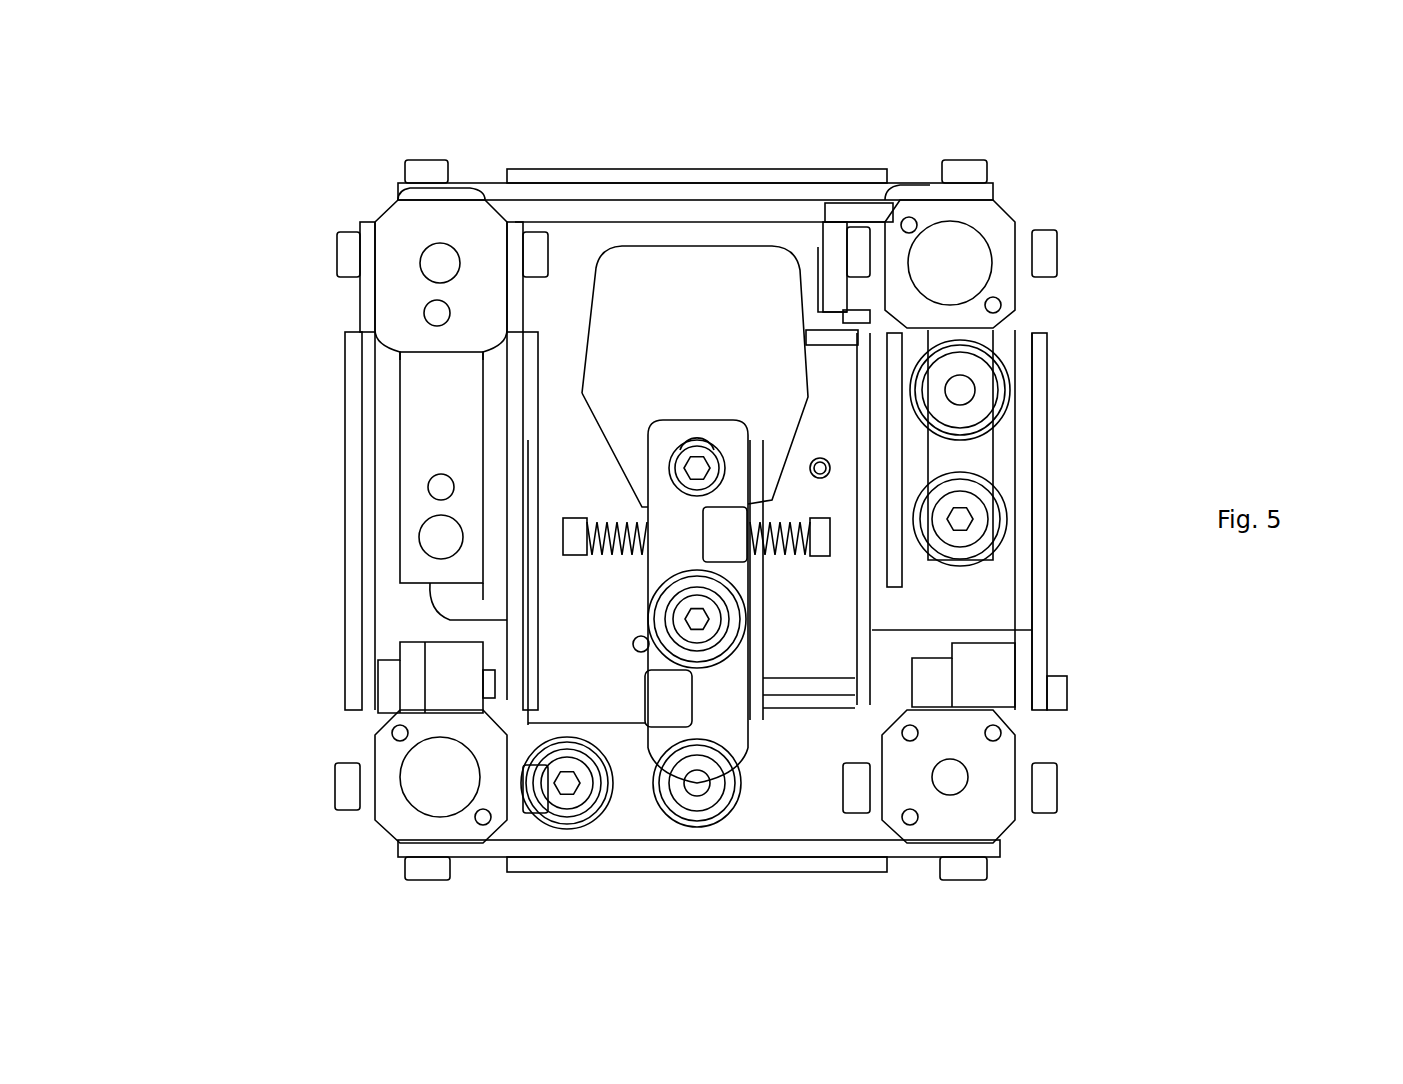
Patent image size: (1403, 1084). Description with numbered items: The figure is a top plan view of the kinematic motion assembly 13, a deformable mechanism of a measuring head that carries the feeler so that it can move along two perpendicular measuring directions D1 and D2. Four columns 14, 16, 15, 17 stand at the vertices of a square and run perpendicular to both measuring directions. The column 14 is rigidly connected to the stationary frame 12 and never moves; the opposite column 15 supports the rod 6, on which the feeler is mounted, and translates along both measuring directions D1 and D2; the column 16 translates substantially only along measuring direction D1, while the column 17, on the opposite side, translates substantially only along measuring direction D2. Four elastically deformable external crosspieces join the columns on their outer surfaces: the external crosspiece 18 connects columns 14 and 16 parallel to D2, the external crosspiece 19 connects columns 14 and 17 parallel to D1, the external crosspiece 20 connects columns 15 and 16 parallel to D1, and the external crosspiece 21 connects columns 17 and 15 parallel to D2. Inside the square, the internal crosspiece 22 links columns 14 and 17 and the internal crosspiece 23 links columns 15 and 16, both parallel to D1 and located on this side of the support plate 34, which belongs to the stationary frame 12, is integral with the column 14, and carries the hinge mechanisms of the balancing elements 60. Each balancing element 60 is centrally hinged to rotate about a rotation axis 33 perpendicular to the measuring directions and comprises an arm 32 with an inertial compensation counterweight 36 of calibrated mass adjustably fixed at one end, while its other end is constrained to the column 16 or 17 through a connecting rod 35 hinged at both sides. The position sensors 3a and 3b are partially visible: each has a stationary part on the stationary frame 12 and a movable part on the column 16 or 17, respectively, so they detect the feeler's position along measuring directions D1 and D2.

The kinematic motion assembly 13 is at (1248, 824).
The external crosspiece 18 is at (604, 178).
The external crosspiece 21 is at (715, 858).
The column 14 is at (391, 228).
The column 16 is at (998, 232).
The column 17 is at (396, 815).
The column 15 is at (992, 815).
The external crosspiece 19 is at (355, 487).
The external crosspiece 20 is at (1035, 607).
The stationary frame 12 is at (420, 390).
The internal crosspiece 22 is at (518, 625).
The internal crosspiece 23 is at (880, 628).
The support plate 34 is at (553, 500).
The inertial compensation counterweight 36 is at (681, 270).
The balancing element 60 is at (555, 397).
The arm 32 is at (673, 553).
The rotation axis 33 is at (690, 618).
The connecting rod 35 is at (983, 455).
The position sensor 3a is at (880, 328).
The position sensor 3b is at (505, 700).
The rod 6 is at (1060, 695).
The measuring direction D1 is at (204, 678).
The measuring direction D2 is at (568, 50).